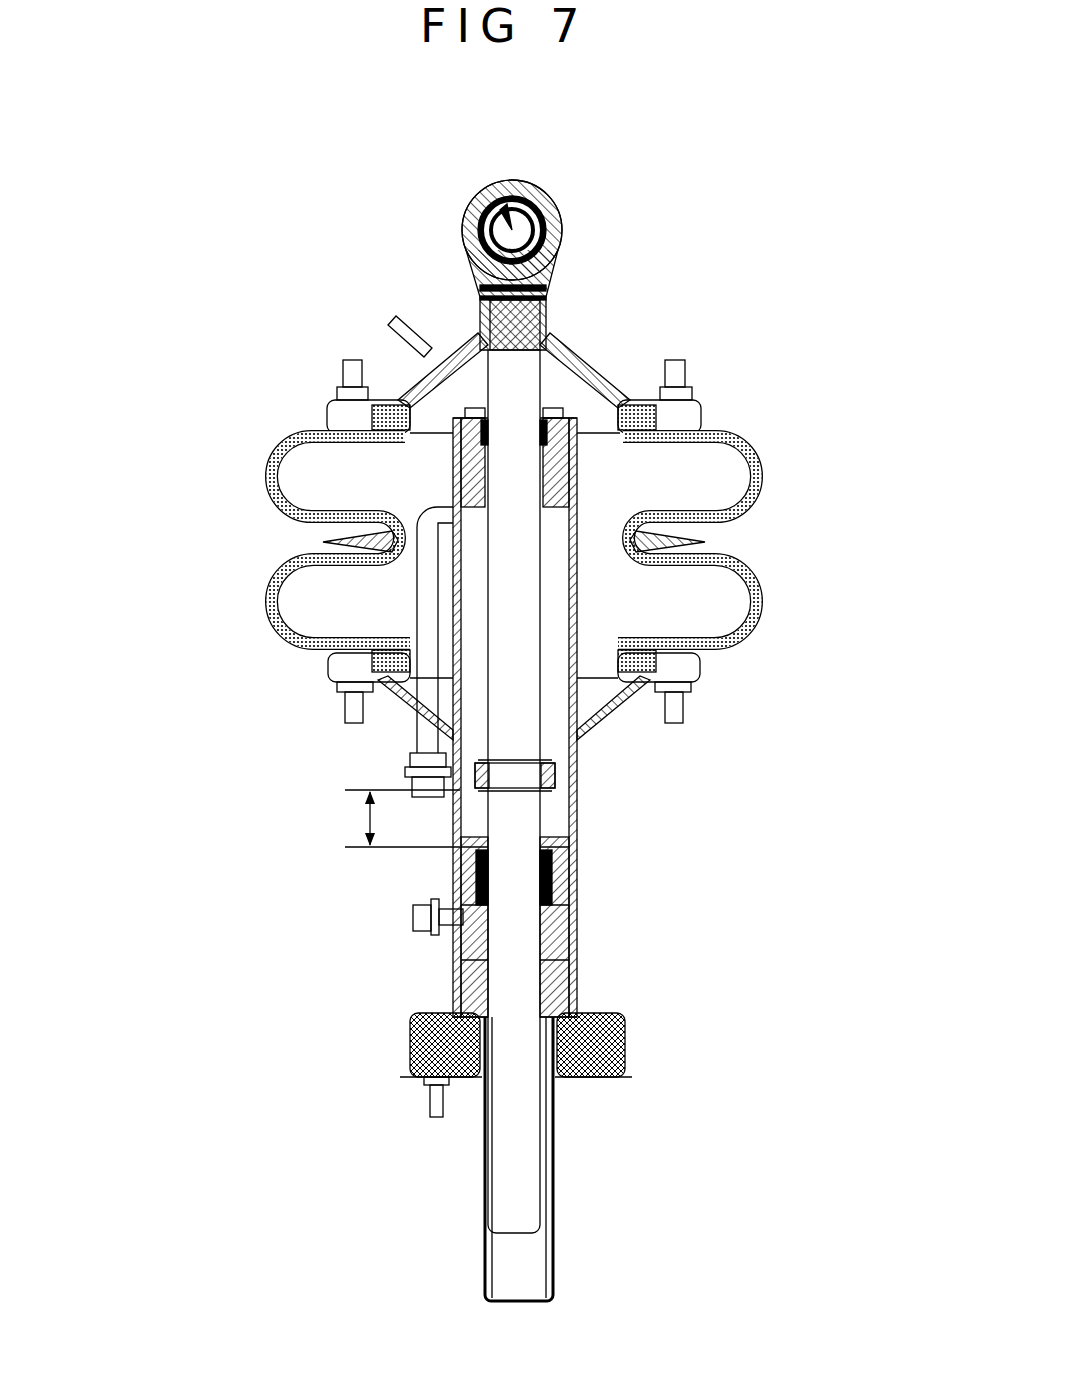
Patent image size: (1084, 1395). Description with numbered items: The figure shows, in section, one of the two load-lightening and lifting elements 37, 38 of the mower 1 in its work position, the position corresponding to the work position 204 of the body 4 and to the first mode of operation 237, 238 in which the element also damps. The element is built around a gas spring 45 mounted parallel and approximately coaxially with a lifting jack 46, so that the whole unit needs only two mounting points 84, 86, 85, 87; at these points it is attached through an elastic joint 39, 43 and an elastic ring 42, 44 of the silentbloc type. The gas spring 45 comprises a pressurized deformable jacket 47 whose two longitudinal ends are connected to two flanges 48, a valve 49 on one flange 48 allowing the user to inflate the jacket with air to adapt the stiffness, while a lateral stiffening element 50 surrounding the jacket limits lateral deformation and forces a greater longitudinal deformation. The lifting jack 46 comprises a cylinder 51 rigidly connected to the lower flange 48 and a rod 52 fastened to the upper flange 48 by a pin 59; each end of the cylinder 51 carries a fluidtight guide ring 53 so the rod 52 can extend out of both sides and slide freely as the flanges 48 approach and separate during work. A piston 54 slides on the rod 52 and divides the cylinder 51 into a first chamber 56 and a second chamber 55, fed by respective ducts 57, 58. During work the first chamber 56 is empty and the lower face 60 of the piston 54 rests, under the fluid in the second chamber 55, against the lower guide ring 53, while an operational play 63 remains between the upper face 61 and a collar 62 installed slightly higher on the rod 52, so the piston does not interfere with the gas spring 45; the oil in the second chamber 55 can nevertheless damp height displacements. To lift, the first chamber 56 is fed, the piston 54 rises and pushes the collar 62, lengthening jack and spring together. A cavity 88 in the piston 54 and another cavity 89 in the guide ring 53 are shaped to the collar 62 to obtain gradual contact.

The mower 1 is at (757, 118).
The body 4 is at (775, 232).
The work position 204 is at (853, 127).
The first mode of operation 237 is at (175, 249).
The first mode of operation 238 is at (175, 249).
The first load-lightening and lifting element 37 is at (403, 516).
The second load-lightening and lifting element 38 is at (318, 398).
The elastic joint 39 is at (602, 1096).
The elastic joint 43 is at (625, 1073).
The elastic ring 42 is at (532, 232).
The elastic ring 44 is at (532, 232).
The gas spring 45 is at (574, 513).
The lifting jack 46 is at (585, 982).
The deformable jacket 47 is at (765, 520).
The flanges 48 is at (533, 360).
The valve 49 is at (398, 318).
The lateral stiffening element 50 is at (330, 543).
The cylinder 51 is at (580, 592).
The rod 52 is at (586, 338).
The fluidtight guide ring 53 is at (455, 482).
The piston 54 is at (580, 903).
The second chamber 55 is at (462, 613).
The first chamber 56 is at (462, 928).
The duct 57 is at (412, 758).
The duct 58 is at (413, 897).
The pin 59 is at (478, 290).
The lower face 60 is at (580, 917).
The upper face 61 is at (580, 822).
The collar 62 is at (555, 770).
The operational play 63 is at (370, 818).
The mounting point 84 is at (431, 188).
The mounting point 86 is at (431, 188).
The mounting point 85 is at (409, 825).
The mounting point 87 is at (517, 1062).
The cavity 88 is at (567, 808).
The cavity 89 is at (580, 540).